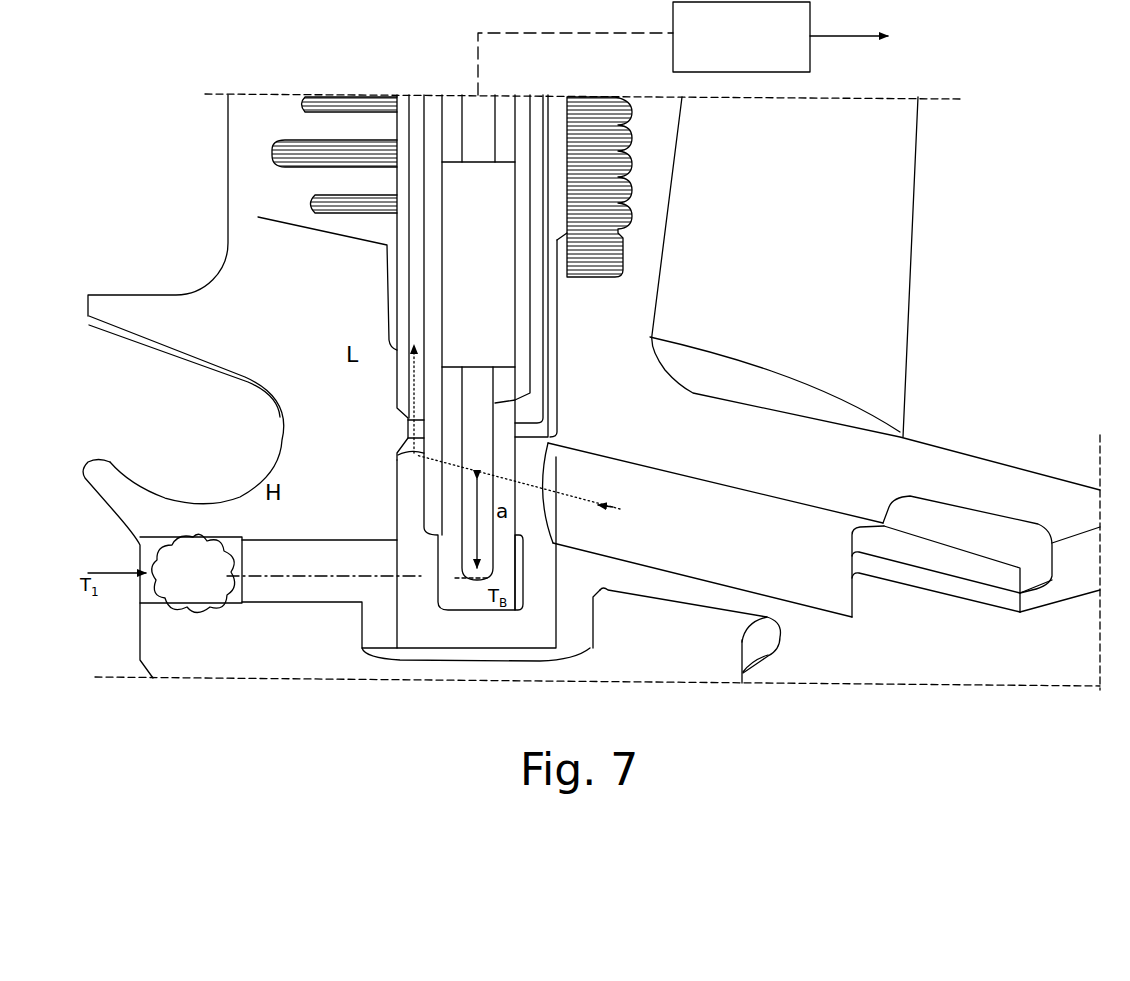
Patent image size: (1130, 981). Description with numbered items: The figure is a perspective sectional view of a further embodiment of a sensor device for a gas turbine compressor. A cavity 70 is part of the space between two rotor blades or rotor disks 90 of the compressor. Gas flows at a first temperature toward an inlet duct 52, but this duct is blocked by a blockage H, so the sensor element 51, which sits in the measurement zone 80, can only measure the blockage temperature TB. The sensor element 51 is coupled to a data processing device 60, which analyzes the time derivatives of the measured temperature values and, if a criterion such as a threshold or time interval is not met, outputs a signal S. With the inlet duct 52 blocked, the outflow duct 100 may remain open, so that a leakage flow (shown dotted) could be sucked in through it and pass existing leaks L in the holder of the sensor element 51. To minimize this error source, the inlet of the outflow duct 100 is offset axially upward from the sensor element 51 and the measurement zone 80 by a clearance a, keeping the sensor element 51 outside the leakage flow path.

The sensor element 51 is at (546, 473).
The inlet duct 52 is at (268, 632).
The data processing device 60 is at (748, 51).
The cavity 70 is at (66, 401).
The measurement zone 80 is at (455, 593).
The rotor blades or rotor disks 90 is at (360, 437).
The outflow duct 100 is at (678, 526).